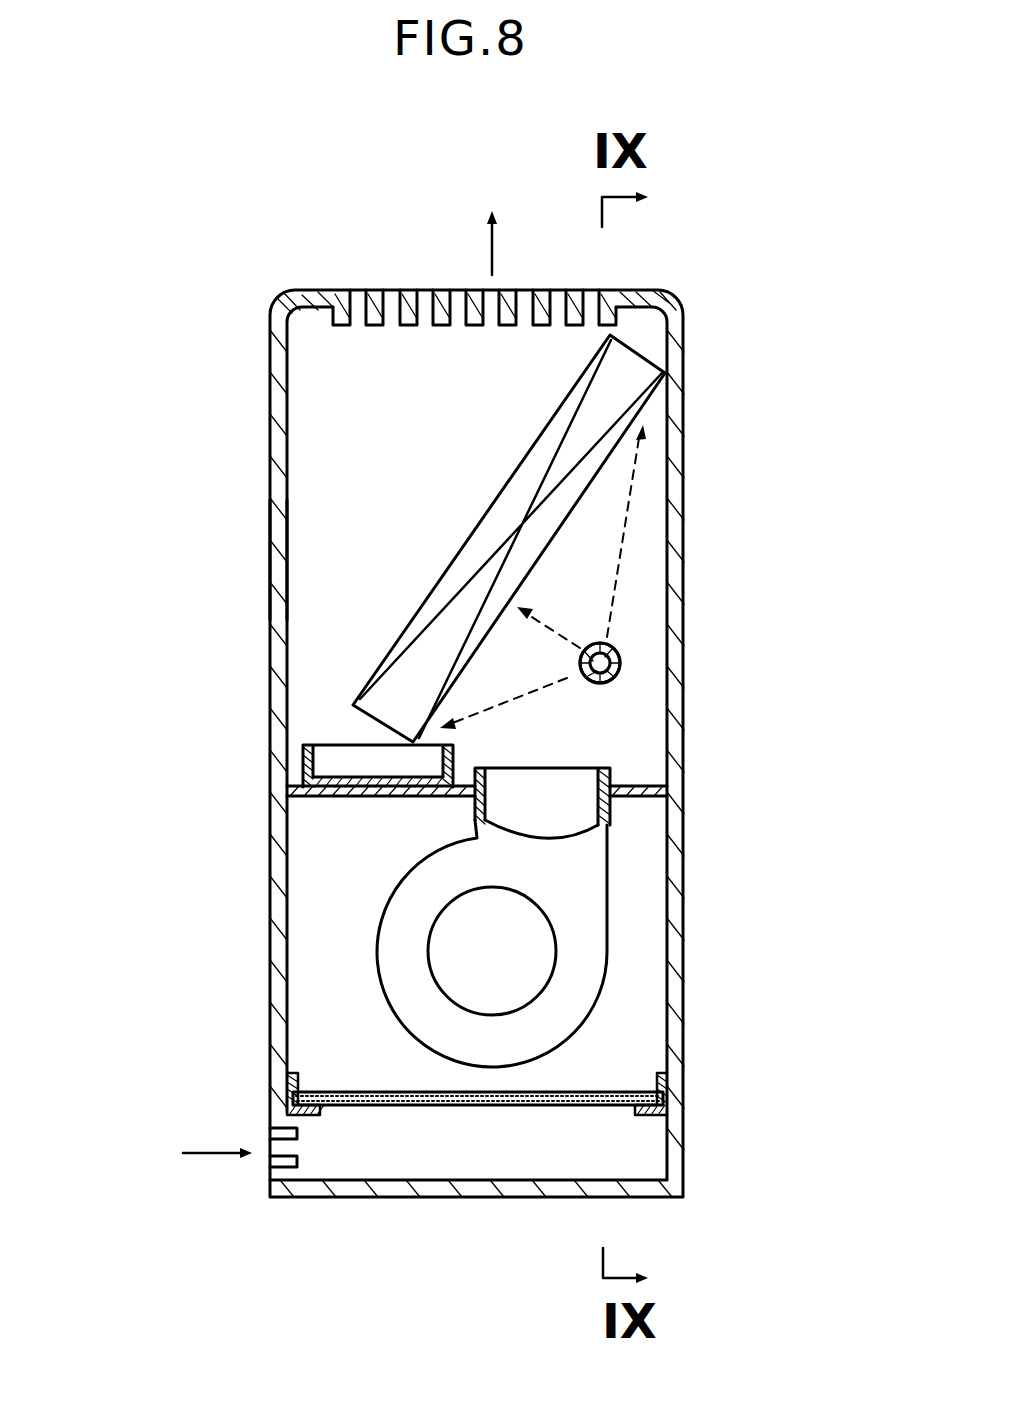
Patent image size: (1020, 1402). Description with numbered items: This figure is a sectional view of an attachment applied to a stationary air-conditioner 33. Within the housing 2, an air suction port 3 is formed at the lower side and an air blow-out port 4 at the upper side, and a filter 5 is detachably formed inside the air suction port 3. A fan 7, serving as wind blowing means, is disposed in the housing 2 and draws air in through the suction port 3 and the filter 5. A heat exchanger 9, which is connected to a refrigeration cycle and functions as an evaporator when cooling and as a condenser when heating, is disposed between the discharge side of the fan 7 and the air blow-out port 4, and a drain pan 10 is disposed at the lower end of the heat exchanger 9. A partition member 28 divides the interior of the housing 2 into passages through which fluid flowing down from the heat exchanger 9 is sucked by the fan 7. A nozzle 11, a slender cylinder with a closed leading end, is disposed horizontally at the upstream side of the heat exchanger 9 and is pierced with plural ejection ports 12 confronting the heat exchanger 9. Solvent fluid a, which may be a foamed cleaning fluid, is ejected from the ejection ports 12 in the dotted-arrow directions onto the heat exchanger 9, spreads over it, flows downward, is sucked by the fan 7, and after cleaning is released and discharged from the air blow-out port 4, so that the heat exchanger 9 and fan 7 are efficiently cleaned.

The housing 2 is at (687, 710).
The air suction port 3 is at (270, 1168).
The air blow-out port 4 is at (394, 290).
The filter 5 is at (490, 1105).
The fan 7 is at (378, 928).
The heat exchanger 9 is at (510, 475).
The drain pan 10 is at (332, 755).
The nozzle 11 is at (606, 684).
The ejection port 12 is at (605, 643).
The partition member 28 is at (350, 792).
The stationary air-conditioner 33 is at (248, 559).
The solvent fluid a is at (628, 532).